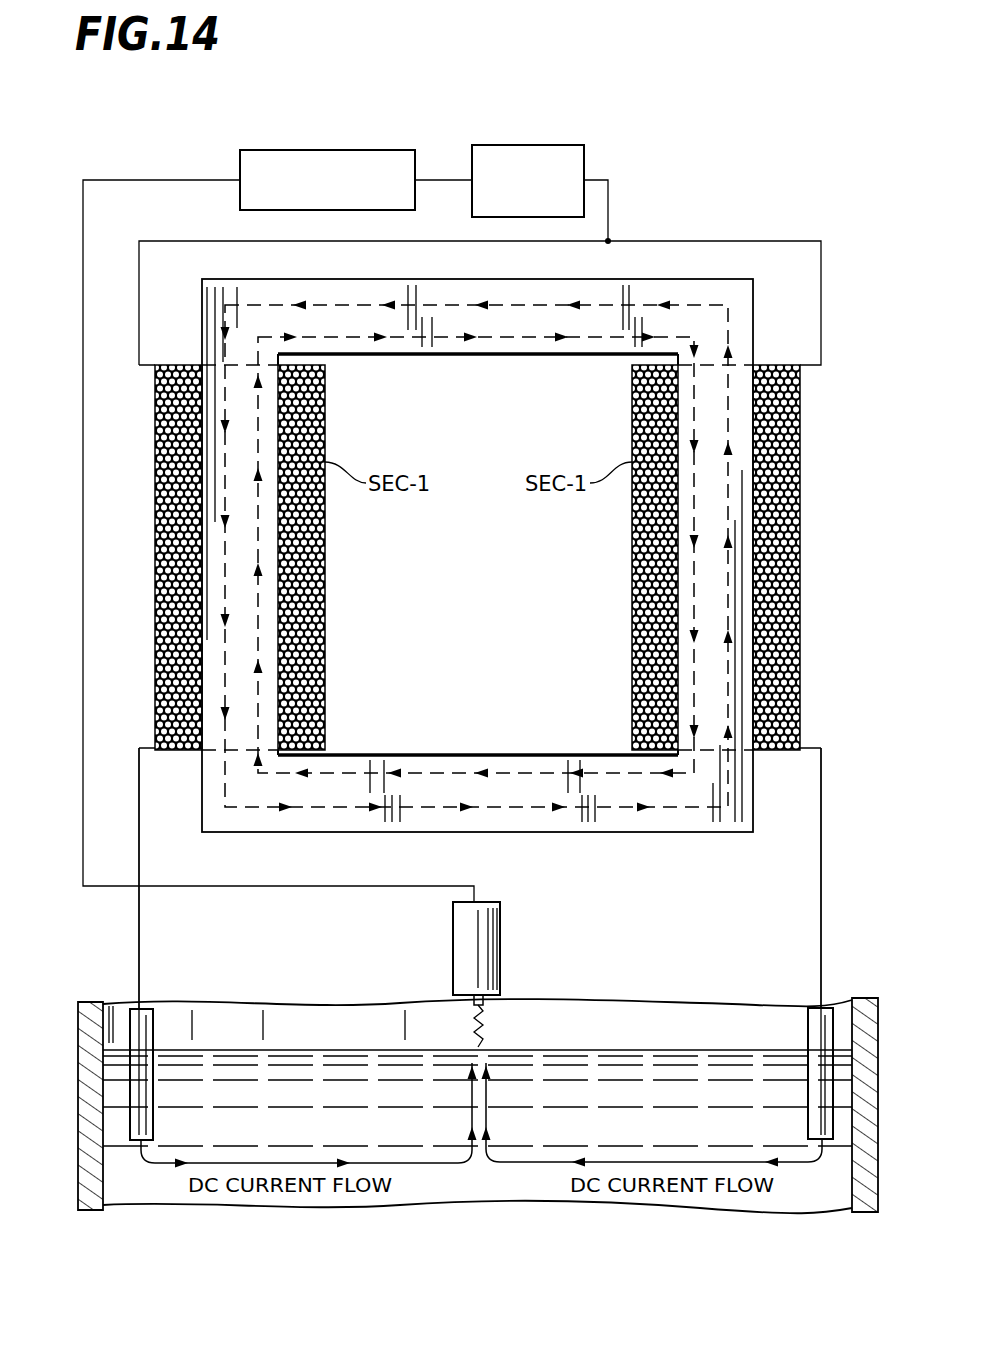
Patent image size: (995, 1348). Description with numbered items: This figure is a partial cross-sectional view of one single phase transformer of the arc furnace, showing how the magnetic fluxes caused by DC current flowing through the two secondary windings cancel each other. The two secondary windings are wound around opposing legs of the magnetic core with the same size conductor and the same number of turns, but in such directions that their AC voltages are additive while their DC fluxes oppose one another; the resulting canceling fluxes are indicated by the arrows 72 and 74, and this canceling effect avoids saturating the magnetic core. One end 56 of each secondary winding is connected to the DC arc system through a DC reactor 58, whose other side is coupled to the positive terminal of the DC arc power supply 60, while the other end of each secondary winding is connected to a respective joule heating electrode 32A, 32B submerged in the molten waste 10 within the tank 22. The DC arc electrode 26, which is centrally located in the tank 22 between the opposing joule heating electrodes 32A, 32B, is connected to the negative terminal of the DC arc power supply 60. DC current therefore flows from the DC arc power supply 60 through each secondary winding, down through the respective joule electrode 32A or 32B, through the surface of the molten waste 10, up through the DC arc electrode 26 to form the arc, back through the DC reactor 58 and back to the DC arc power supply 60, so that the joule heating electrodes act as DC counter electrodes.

The molten waste 10 is at (380, 1142).
The first tank 22 is at (78, 1104).
The DC arc electrode 26 is at (500, 937).
The AC joule heating electrode 32A is at (153, 1024).
The AC joule heating electrode 32B is at (808, 1027).
The end of secondary winding 56 is at (139, 320).
The DC reactor 58 is at (528, 145).
The DC arc power supply 60 is at (318, 150).
The arrows indicating magnetic flux 72 is at (348, 807).
The arrows indicating magnetic flux 74 is at (337, 773).